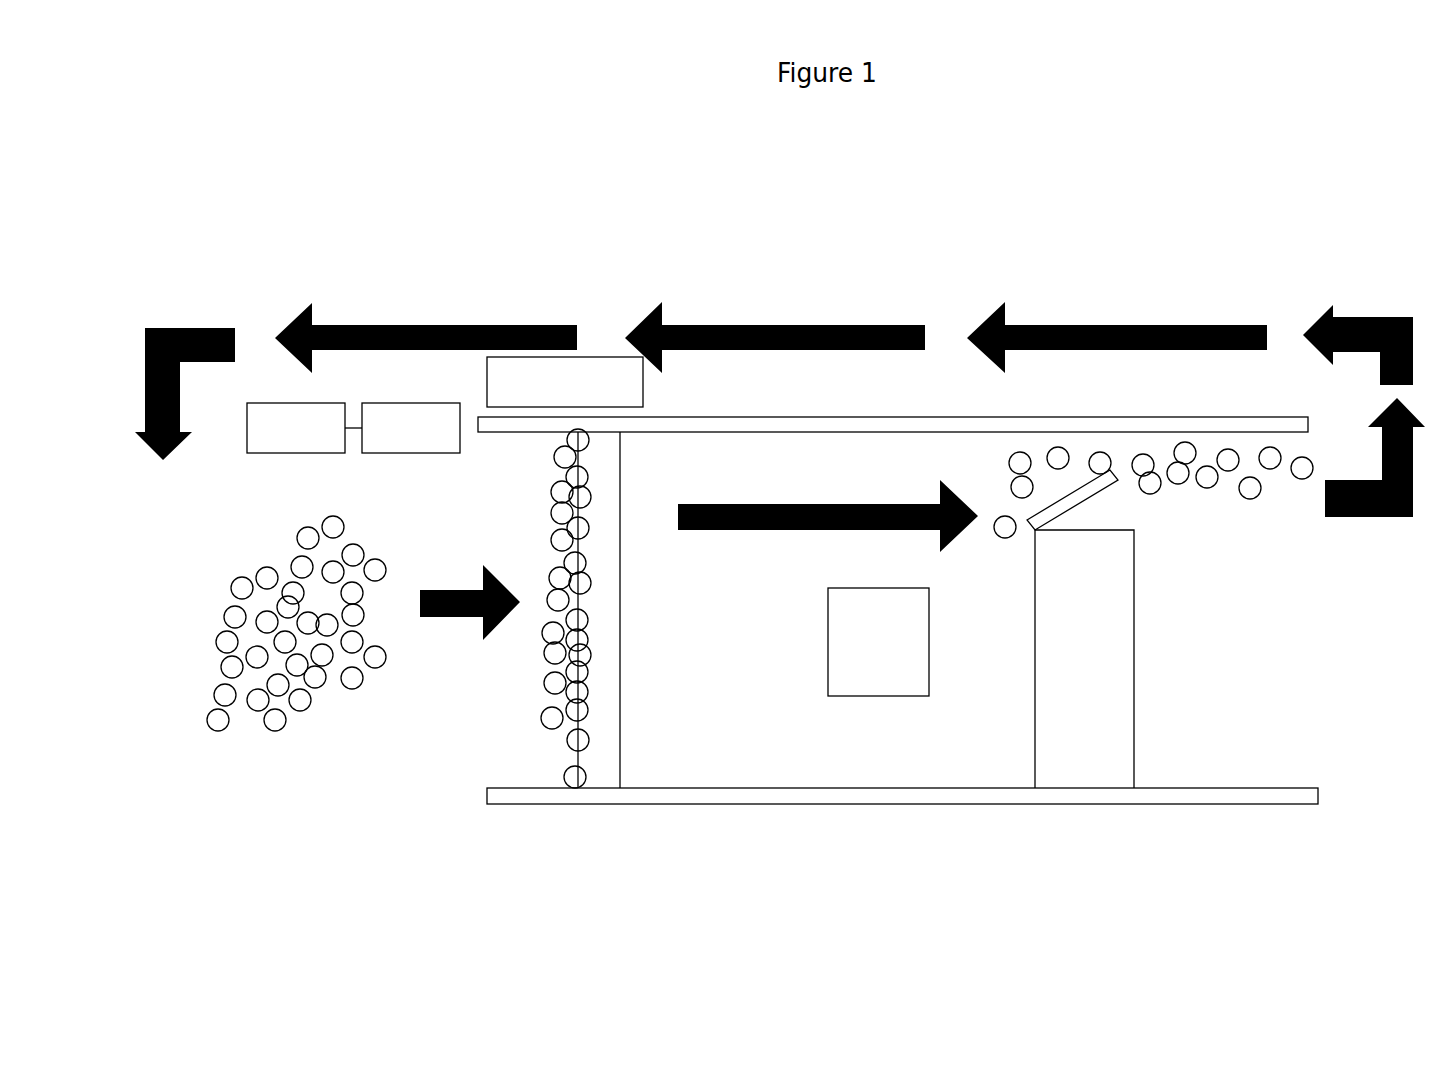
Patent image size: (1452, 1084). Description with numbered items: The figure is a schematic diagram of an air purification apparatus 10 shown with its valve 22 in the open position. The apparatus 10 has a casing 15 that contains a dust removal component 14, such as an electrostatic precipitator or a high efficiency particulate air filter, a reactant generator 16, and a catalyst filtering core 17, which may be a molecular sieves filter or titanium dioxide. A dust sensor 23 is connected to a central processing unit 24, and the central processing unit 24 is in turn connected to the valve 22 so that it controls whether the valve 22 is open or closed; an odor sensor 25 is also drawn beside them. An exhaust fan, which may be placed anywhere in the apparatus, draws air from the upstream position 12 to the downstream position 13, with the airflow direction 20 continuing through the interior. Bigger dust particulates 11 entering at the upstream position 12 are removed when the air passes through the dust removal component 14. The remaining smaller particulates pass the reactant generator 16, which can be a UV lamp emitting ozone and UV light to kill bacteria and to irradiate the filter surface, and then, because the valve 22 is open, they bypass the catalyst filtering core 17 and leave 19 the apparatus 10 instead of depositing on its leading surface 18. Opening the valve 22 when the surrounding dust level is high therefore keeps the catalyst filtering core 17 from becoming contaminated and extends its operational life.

The air purification apparatus 10 is at (1176, 226).
The bigger dust particulates 11 is at (318, 710).
The upstream position 12 is at (467, 578).
The downstream position 13 is at (560, 740).
The dust removal component 14 is at (608, 763).
The casing 15 is at (746, 804).
The reactant generator 16 is at (859, 696).
The catalyst filtering core 17 is at (1117, 760).
The leading surface 18 is at (1037, 749).
The leave 19 is at (1298, 477).
The air flow direction 20 is at (830, 492).
The valve 22 is at (1103, 495).
The dust sensor 23 is at (303, 403).
The central processing unit 24 is at (415, 403).
The odor sensor 25 is at (575, 357).